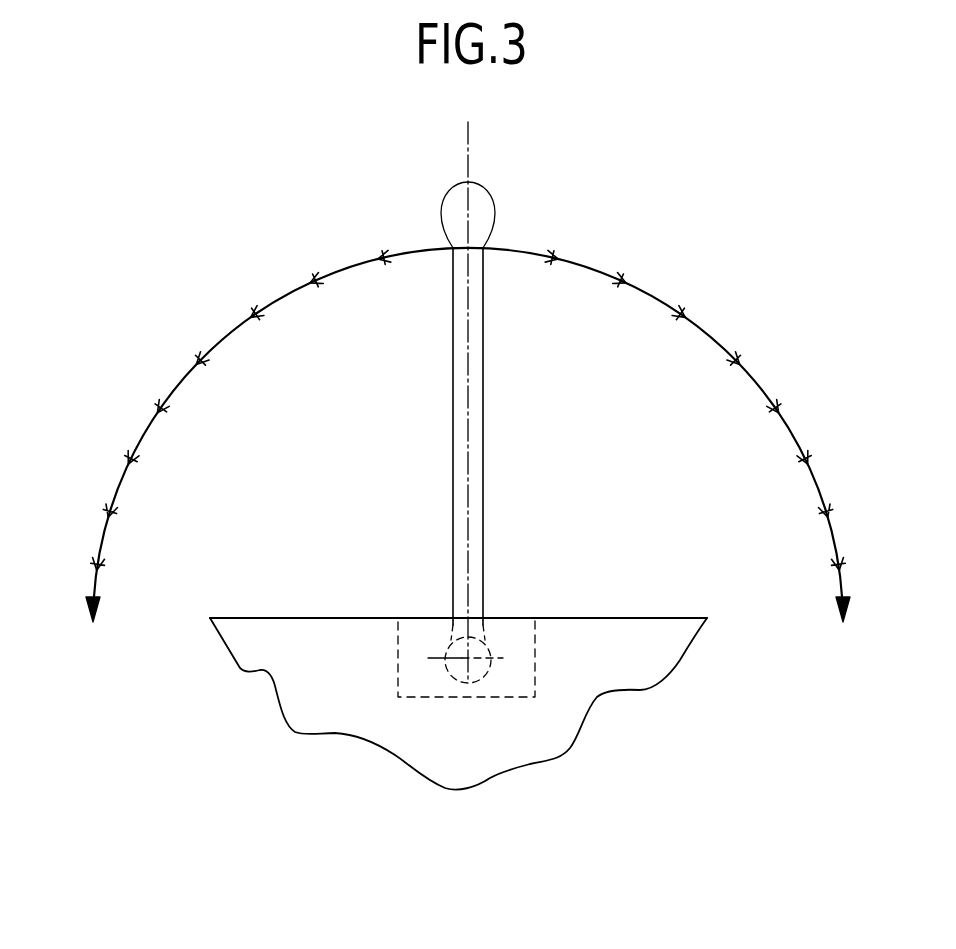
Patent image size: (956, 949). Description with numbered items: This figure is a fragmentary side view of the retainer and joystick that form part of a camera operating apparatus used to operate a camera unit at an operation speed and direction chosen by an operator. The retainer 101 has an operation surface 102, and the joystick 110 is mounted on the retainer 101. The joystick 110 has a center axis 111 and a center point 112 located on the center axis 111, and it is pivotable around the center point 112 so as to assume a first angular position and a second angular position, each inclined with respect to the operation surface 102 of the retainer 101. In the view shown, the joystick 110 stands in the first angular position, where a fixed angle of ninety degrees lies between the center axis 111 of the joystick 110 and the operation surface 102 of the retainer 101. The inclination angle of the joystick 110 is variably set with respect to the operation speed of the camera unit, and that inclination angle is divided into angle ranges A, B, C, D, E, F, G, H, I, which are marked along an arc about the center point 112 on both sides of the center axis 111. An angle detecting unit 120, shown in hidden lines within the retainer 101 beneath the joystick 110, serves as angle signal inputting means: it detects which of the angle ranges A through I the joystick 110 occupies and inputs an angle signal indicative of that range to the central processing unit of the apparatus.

The retainer 101 is at (584, 699).
The operation surface 102 is at (619, 617).
The joystick 110 is at (478, 202).
The center axis 111 is at (467, 169).
The center point 112 is at (456, 666).
The angle detecting unit 120 is at (398, 668).
The angle range A is at (520, 250).
The angle range B is at (357, 262).
The angle range C is at (287, 291).
The angle range D is at (224, 337).
The angle range E is at (178, 382).
The angle range F is at (140, 436).
The angle range G is at (111, 493).
The angle range H is at (96, 548).
The angle range I is at (82, 594).